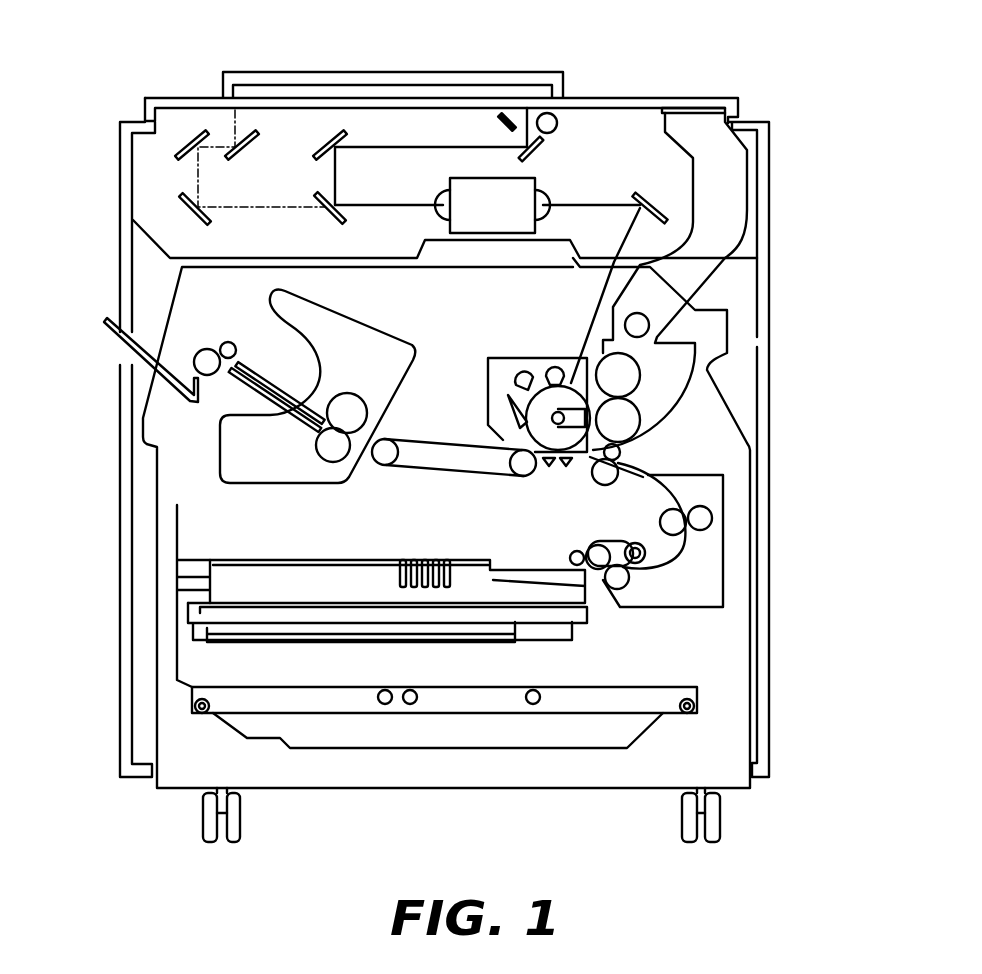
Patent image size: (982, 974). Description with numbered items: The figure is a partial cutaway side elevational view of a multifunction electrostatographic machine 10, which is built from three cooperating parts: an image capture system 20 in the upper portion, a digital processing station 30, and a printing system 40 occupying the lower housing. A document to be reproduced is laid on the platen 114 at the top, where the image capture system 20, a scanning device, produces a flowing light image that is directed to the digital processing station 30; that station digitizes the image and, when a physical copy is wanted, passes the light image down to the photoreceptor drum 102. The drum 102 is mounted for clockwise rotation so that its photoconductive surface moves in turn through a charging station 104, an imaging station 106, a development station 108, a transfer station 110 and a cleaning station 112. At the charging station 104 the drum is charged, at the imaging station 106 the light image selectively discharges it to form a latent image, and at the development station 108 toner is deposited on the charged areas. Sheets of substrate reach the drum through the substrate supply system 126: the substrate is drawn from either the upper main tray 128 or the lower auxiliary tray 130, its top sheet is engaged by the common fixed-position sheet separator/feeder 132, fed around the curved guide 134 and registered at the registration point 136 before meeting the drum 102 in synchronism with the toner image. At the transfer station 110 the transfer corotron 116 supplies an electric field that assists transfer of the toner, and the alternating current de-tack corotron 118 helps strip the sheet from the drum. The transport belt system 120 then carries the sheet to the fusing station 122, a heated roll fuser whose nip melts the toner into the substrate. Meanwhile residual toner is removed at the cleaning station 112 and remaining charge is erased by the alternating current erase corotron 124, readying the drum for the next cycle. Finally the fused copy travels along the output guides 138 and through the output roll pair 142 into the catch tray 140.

The multifunction electrostatographic machine 10 is at (792, 84).
The image capture system 20 is at (120, 80).
The digital processing station 30 is at (537, 178).
The printing system 40 is at (790, 322).
The photoreceptor drum 102 is at (537, 380).
The charging station 104 is at (550, 367).
The imaging station 106 is at (568, 368).
The development station 108 is at (595, 420).
The transfer station 110 is at (560, 482).
The cleaning station 112 is at (508, 420).
The platen 114 is at (421, 78).
The transfer corotron 116 is at (572, 470).
The alternating current de-tack corotron 118 is at (549, 466).
The transport belt system 120 is at (428, 470).
The fusing station 122 is at (357, 393).
The alternating current erase corotron 124 is at (523, 368).
The substrate supply system 126 is at (745, 538).
The main tray 128 is at (288, 575).
The auxiliary tray 130 is at (265, 636).
The sheet separator/feeder 132 is at (643, 580).
The curved guide 134 is at (672, 498).
The registration point 136 is at (640, 459).
The output guides 138 is at (250, 372).
The catch tray 140 is at (108, 320).
The output roll pair 142 is at (218, 343).